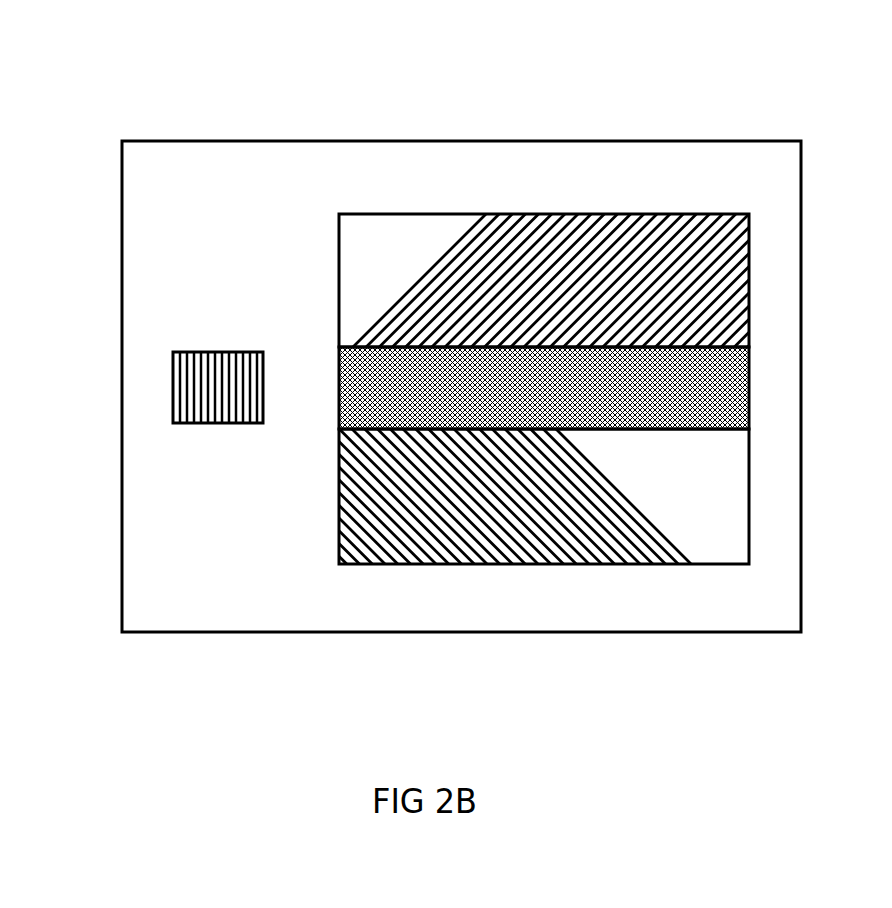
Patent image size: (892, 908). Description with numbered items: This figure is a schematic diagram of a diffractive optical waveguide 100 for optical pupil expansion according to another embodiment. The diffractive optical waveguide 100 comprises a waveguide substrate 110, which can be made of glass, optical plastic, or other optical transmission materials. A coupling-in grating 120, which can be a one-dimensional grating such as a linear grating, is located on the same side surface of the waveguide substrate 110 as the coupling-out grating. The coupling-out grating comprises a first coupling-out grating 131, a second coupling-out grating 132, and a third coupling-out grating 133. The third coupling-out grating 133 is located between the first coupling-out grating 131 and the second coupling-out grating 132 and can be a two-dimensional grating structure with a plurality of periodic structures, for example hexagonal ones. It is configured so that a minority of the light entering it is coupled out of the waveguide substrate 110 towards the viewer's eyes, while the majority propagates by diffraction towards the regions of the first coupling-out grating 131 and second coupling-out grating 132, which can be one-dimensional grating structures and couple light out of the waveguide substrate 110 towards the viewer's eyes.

The diffractive optical waveguide 100 is at (176, 82).
The waveguide substrate 110 is at (221, 192).
The coupling-in grating 120 is at (220, 381).
The first coupling-out grating 131 is at (524, 232).
The second coupling-out grating 132 is at (545, 524).
The third coupling-out grating 133 is at (375, 400).